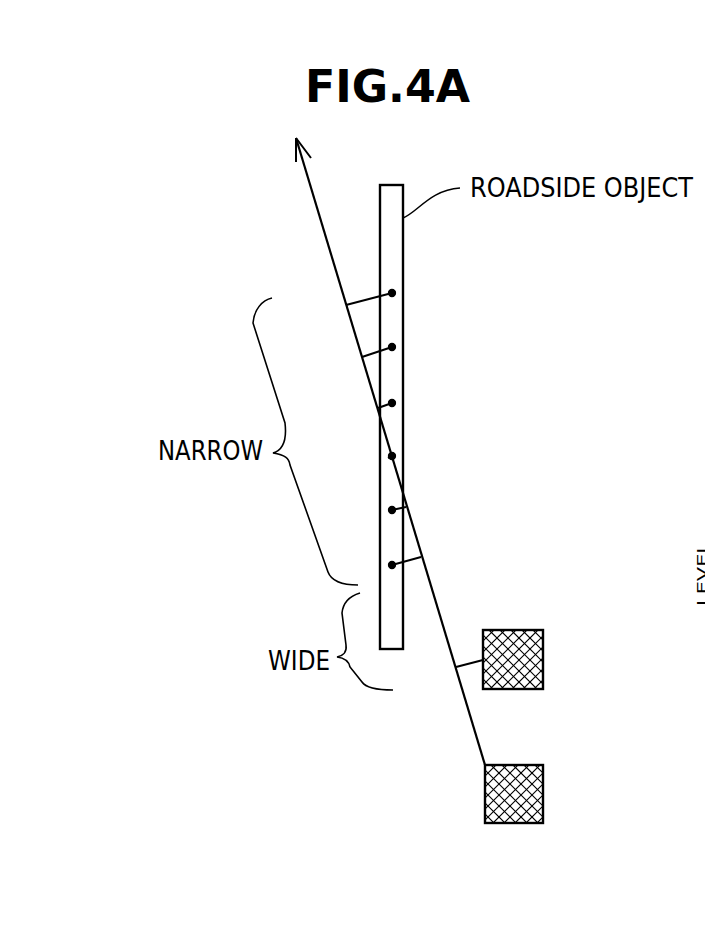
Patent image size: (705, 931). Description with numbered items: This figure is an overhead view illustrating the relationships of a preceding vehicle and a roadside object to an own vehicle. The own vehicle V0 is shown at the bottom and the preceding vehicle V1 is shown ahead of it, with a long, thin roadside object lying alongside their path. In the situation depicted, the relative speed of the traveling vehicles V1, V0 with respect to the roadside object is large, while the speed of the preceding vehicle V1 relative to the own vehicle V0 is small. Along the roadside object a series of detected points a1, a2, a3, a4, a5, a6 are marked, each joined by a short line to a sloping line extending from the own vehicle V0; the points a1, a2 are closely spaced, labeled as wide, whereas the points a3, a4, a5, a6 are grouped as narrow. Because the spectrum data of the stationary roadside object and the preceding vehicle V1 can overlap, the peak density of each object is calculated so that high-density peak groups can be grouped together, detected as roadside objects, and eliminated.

The detected roadside object point a1 is at (386, 565).
The detected roadside object point a2 is at (379, 511).
The detected roadside object point a3 is at (413, 457).
The detected roadside object point a4 is at (408, 404).
The detected roadside object point a5 is at (400, 348).
The detected roadside object point a6 is at (392, 294).
The preceding vehicle V1 is at (538, 644).
The own vehicle V0 is at (541, 795).